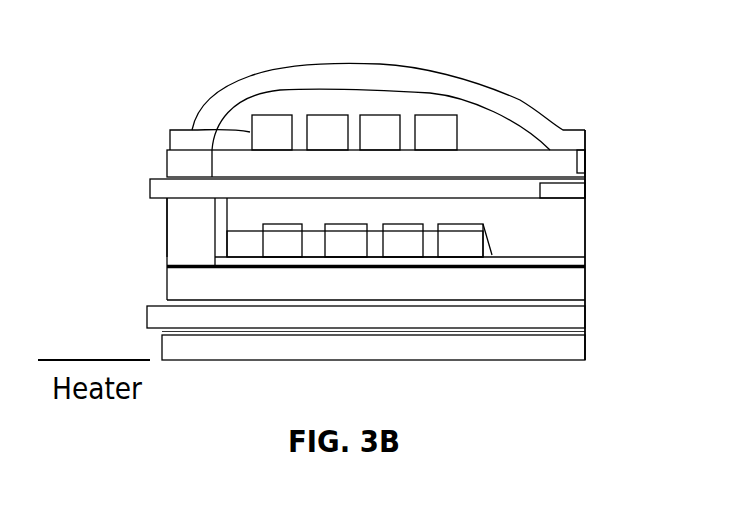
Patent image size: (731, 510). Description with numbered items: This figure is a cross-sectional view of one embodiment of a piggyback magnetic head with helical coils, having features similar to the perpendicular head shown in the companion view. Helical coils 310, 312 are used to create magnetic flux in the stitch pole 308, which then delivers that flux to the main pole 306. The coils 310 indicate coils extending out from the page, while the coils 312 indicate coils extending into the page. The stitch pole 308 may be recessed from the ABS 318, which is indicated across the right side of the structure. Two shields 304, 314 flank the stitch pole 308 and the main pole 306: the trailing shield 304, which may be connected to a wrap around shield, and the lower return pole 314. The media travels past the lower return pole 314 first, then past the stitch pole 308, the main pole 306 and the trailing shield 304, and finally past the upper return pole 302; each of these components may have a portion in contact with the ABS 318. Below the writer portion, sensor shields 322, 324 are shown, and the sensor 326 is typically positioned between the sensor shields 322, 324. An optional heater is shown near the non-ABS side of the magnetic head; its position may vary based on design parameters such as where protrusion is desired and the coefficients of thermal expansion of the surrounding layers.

The upper return pole 302 is at (520, 100).
The trailing shield 304 is at (587, 162).
The main pole 306 is at (587, 188).
The stitch pole 308 is at (533, 200).
The helical coils 310 is at (192, 128).
The helical coils 312 is at (265, 219).
The lower return pole 314 is at (415, 291).
The ABS 318 is at (588, 270).
The sensor shield 322 is at (148, 308).
The sensor shield 324 is at (163, 347).
The sensor 326 is at (578, 329).